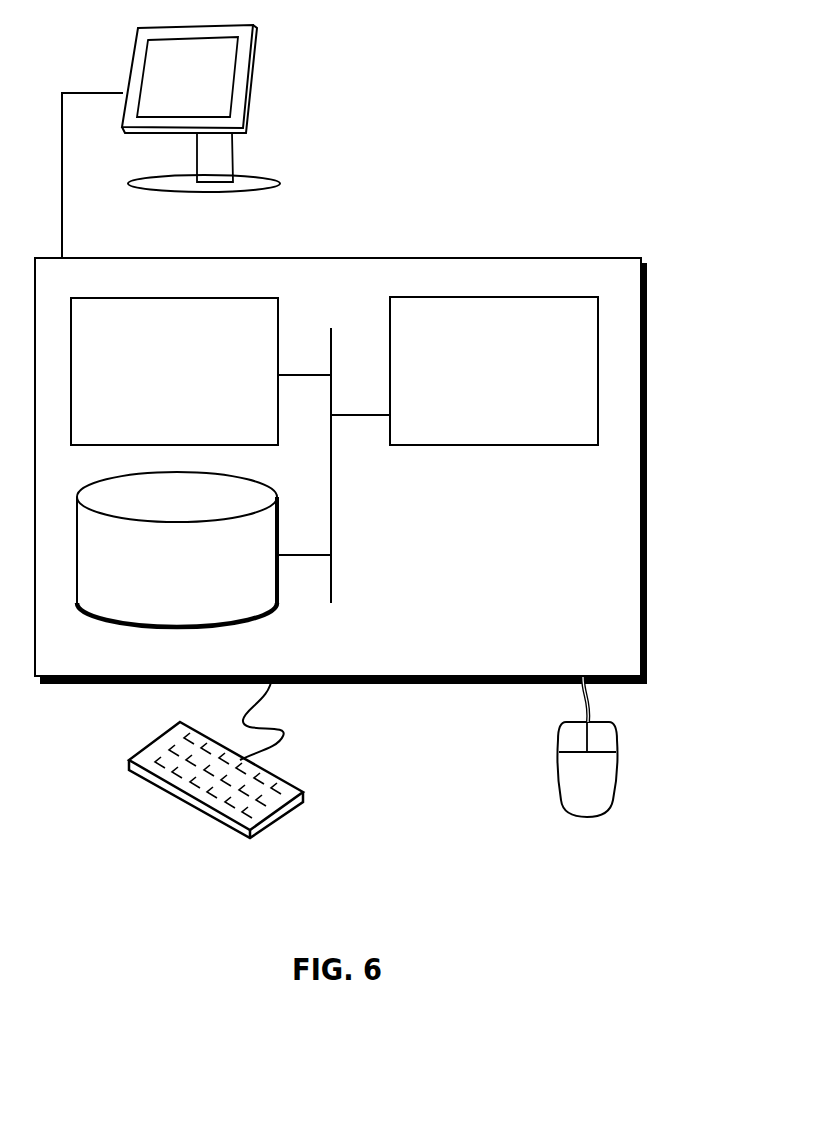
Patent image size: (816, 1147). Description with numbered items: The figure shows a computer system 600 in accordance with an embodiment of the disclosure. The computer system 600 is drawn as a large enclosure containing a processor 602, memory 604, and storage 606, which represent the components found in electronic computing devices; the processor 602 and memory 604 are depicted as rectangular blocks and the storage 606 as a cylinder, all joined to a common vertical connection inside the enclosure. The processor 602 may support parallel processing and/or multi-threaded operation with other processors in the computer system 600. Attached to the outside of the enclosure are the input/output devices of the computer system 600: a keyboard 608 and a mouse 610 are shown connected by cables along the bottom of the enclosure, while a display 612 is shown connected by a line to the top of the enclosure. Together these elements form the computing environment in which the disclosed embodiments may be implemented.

The computer system 600 is at (380, 240).
The processor 602 is at (478, 382).
The memory 604 is at (156, 382).
The storage 606 is at (161, 576).
The keyboard 608 is at (145, 780).
The mouse 610 is at (568, 789).
The display 612 is at (171, 141).